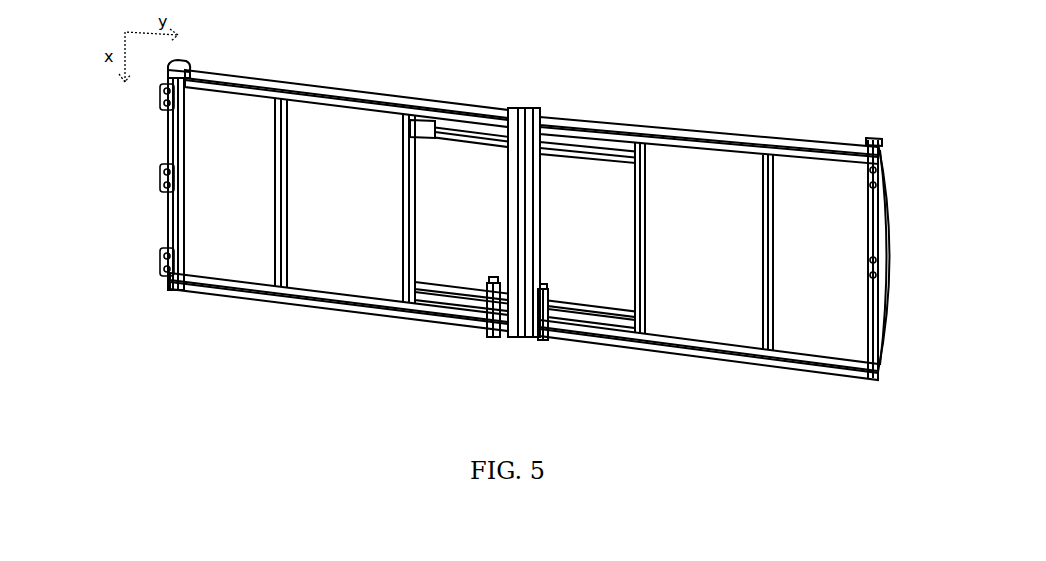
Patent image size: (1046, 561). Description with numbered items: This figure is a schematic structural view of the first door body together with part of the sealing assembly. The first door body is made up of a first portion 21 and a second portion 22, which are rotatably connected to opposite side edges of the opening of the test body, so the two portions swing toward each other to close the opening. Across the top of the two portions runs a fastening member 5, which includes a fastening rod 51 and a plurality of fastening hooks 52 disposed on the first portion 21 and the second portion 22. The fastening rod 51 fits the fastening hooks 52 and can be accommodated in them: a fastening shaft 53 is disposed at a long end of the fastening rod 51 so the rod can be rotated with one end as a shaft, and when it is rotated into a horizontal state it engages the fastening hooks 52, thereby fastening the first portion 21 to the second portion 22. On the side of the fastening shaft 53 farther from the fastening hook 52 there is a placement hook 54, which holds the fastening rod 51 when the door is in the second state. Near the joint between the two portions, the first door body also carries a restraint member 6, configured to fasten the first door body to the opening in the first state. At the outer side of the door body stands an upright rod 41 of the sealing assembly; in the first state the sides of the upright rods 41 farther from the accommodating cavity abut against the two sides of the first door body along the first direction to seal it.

The fastening member 5 is at (535, 101).
The restraint member 6 is at (502, 337).
The first portion 21 is at (338, 258).
The second portion 22 is at (713, 295).
The upright rod 41 is at (186, 62).
The fastening rod 51 is at (450, 102).
The fastening hook 52 is at (623, 117).
The fastening shaft 53 is at (415, 98).
The placement hook 54 is at (297, 78).